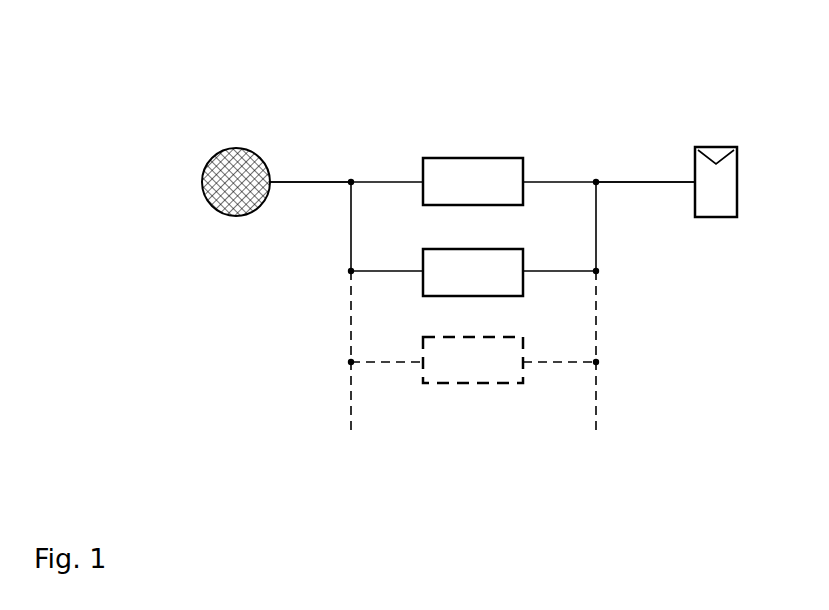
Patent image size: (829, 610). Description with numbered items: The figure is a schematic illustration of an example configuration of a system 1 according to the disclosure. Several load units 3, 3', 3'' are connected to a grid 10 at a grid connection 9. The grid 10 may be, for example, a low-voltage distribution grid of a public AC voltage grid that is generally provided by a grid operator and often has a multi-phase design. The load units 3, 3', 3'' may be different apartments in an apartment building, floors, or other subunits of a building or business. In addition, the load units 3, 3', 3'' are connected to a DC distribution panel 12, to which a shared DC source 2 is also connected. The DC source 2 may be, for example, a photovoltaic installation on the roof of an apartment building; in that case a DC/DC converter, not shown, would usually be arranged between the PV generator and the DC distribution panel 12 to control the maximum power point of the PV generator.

The system 1 is at (606, 80).
The DC source 2 is at (738, 177).
The load unit 3 is at (488, 160).
The load unit 3' is at (490, 251).
The load unit 3'' is at (493, 339).
The grid connection 9 is at (312, 180).
The grid 10 is at (238, 151).
The DC distribution panel 12 is at (630, 180).